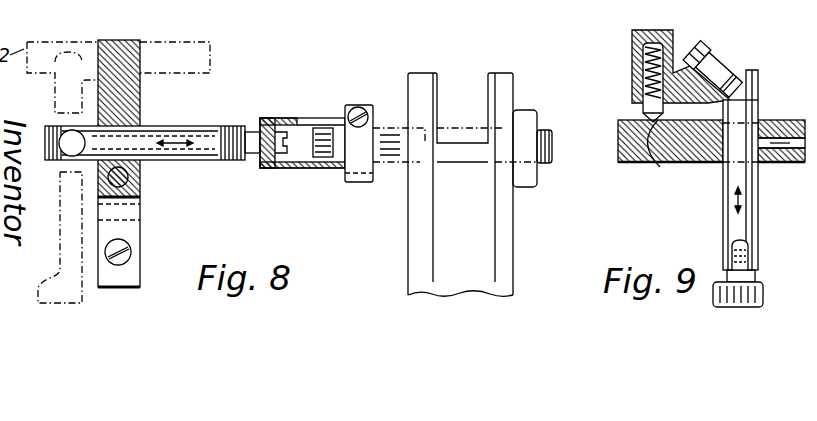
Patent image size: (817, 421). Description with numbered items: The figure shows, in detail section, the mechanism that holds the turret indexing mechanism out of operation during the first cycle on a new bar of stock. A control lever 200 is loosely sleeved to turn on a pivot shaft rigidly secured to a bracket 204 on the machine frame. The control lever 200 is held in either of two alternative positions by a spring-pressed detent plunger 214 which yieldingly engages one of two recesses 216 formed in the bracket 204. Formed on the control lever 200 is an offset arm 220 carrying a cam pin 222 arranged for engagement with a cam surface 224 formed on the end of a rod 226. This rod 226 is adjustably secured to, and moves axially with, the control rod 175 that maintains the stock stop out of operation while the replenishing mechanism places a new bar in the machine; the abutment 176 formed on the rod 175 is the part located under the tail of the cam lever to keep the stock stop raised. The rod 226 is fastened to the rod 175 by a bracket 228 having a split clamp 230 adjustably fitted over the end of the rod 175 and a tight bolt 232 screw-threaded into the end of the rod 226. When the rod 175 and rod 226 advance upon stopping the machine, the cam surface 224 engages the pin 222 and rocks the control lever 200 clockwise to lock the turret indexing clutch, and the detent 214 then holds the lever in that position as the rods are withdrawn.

In FIG. 8, the control rod 175 is at (400, 145).
In FIG. 8, the abutment 176 is at (497, 137).
In FIG. 8, the control lever 200 is at (190, 57).
In FIG. 9, the control lever 200 is at (633, 88).
In FIG. 8, the bracket 204 is at (130, 97).
In FIG. 9, the bracket 204 is at (783, 163).
In FIG. 9, the spring-pressed detent plunger 214 is at (647, 108).
In FIG. 9, the recesses 216 is at (658, 164).
In FIG. 9, the offset arm 220 is at (728, 40).
In FIG. 9, the cam pin 222 is at (727, 87).
In FIG. 8, the cam surface 224 is at (70, 152).
In FIG. 9, the cam surface 224 is at (742, 80).
In FIG. 8, the rod 226 is at (203, 150).
In FIG. 9, the rod 226 is at (728, 202).
In FIG. 8, the bracket 228 is at (302, 97).
In FIG. 9, the bracket 228 is at (760, 283).
In FIG. 8, the split clamp 230 is at (375, 75).
In FIG. 8, the tight bolt 232 is at (262, 168).
In FIG. 9, the tight bolt 232 is at (732, 255).